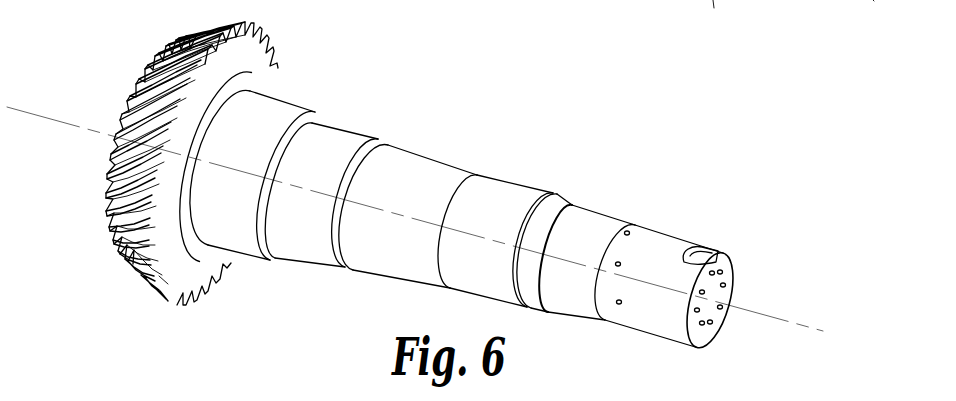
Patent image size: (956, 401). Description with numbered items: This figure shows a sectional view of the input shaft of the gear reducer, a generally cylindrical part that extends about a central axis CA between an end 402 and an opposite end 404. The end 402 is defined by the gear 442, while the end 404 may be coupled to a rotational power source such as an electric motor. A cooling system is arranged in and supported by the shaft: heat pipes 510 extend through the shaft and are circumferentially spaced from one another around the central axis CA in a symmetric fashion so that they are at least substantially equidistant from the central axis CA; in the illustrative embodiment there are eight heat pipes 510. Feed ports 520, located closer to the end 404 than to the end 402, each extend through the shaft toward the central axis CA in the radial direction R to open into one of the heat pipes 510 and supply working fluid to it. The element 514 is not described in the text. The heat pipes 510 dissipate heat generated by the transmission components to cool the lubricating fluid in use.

The end 402 is at (171, 152).
The gear 442 is at (237, 50).
The end 404 is at (727, 250).
The heat pipes 510 is at (721, 310).
The feed ports 520 is at (621, 262).
The reference element (off sheet) 514 is at (715, 18).
The central axis CA is at (509, 244).
The radial direction R is at (873, 0).